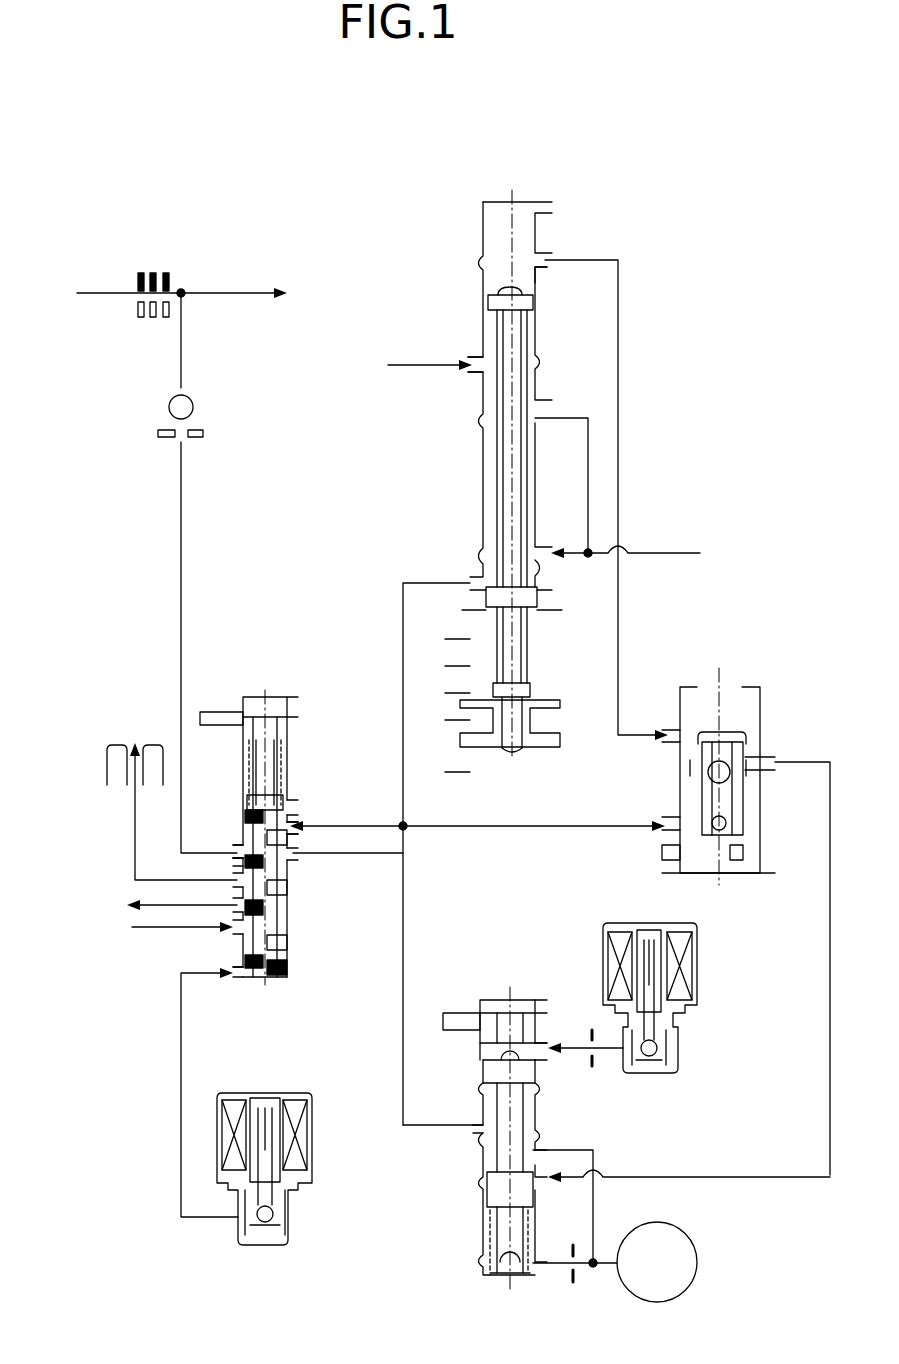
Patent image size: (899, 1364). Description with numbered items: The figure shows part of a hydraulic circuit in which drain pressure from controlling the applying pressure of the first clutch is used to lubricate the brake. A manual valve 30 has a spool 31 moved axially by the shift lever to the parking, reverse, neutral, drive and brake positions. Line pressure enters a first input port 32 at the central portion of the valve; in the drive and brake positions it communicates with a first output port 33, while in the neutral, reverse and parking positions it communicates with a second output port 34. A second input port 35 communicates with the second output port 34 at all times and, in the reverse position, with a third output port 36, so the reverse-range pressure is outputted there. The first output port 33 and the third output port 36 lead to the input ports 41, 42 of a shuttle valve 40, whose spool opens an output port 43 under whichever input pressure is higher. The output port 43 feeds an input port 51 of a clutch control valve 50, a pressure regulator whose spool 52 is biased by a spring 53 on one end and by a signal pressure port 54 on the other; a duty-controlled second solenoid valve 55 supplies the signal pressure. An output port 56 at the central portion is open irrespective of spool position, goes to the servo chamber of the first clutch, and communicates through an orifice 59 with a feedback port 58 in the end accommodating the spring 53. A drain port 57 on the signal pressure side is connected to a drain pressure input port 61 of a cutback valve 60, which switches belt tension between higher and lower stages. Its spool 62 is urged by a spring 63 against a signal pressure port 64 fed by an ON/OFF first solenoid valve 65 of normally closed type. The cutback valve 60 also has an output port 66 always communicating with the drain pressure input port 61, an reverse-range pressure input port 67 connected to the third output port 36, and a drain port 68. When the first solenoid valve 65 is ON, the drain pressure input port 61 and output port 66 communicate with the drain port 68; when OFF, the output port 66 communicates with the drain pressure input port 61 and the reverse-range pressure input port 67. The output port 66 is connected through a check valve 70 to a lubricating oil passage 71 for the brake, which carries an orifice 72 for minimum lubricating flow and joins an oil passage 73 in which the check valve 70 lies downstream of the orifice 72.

The manual valve 30 is at (450, 430).
The spool 31 is at (520, 339).
The first input port 32 is at (477, 358).
The first output port 33 is at (538, 269).
The second output port 34 is at (540, 426).
The second input port 35 is at (545, 563).
The third output port 36 is at (478, 576).
The shuttle valve 40 is at (784, 688).
The input port 41 is at (670, 730).
The input port 42 is at (675, 829).
The output port 43 is at (762, 762).
The C1 control valve 50 is at (490, 972).
The input port 51 is at (540, 1177).
The spool 52 is at (493, 1188).
The spring 53 is at (497, 1270).
The signal pressure port 54 is at (542, 1043).
The second solenoid valve 55 is at (697, 969).
The output port 56 is at (537, 1153).
The drain port 57 is at (480, 1133).
The feedback port 58 is at (543, 1271).
The orifice 59 is at (575, 1281).
The cutback valve 60 is at (316, 742).
The drain pressure input port 61 is at (291, 856).
The spool 62 is at (290, 808).
The spring 63 is at (252, 742).
The signal pressure port 64 is at (240, 975).
The first solenoid valve 65 is at (312, 1113).
The output port 66 is at (242, 848).
The R-range pressure input port 67 is at (293, 827).
The drain port 68 is at (237, 862).
The check valve 70 is at (168, 441).
The lubricating oil passage 71 is at (222, 292).
The orifice 72 is at (142, 319).
The oil passage 73 is at (183, 358).